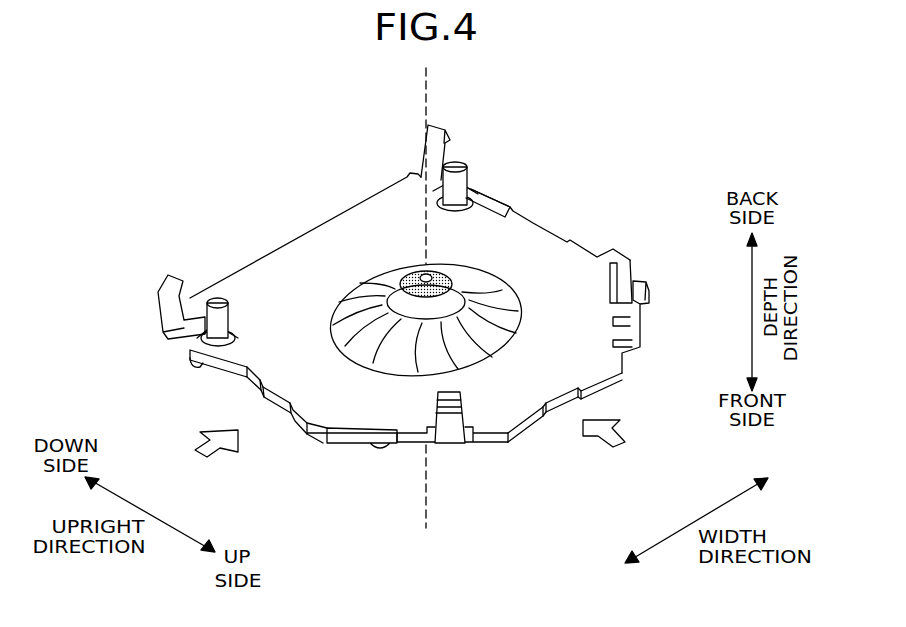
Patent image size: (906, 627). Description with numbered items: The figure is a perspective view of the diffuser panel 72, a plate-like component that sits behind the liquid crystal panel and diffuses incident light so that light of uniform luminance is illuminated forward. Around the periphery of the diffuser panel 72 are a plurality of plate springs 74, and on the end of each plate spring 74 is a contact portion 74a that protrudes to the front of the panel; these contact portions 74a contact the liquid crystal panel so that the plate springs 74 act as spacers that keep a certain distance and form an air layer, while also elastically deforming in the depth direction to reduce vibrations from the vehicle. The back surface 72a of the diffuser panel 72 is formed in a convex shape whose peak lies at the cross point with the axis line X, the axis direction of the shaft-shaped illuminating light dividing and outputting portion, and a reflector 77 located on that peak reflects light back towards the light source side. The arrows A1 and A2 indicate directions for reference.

The diffuser panel 72 is at (251, 175).
The back surface 72a is at (587, 362).
The plate spring 74 is at (497, 207).
The contact portion 74a is at (193, 365).
The reflector 77 is at (440, 273).
The axis line X is at (428, 75).
The direction arrow A1 is at (592, 446).
The direction arrow A2 is at (224, 458).